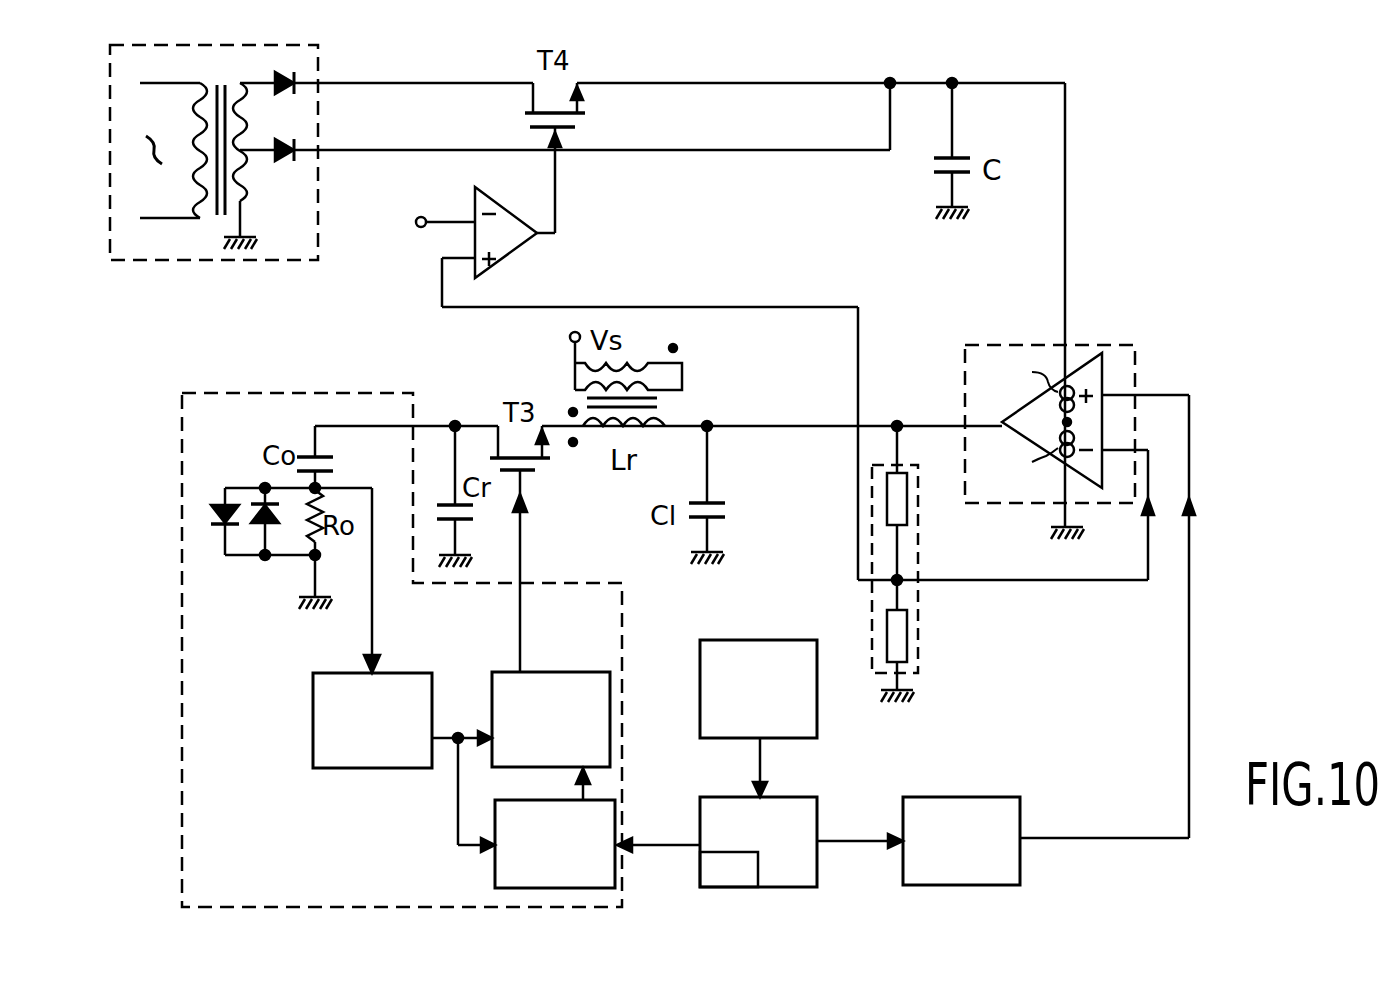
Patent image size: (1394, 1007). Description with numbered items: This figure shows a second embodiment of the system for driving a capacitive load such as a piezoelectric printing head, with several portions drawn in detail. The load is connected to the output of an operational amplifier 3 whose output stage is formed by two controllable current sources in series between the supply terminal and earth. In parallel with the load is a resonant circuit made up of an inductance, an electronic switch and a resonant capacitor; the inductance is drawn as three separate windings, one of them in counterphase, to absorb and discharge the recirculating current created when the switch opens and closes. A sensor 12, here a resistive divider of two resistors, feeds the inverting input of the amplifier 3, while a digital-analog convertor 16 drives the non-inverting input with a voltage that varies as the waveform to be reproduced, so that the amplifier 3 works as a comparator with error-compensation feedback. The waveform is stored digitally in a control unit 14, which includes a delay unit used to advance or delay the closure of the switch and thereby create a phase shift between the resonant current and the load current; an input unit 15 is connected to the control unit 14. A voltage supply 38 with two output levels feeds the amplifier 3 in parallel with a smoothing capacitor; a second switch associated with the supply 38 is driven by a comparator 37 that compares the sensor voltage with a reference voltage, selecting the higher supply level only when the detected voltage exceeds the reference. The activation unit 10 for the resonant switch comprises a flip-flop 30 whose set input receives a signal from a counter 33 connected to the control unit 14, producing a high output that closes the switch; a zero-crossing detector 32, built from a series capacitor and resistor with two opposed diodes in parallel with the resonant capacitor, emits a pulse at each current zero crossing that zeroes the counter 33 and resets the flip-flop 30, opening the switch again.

The voltage supply 38 is at (202, 260).
The comparator 37 is at (514, 250).
The operational amplifier 3 is at (1005, 344).
The sensor 12 is at (870, 500).
The activation unit 10 is at (184, 828).
The zero-crossing detector 32 is at (314, 718).
The flip-flop 30 is at (566, 686).
The counter 33 is at (494, 864).
The input unit 15 is at (759, 660).
The control unit 14 is at (785, 808).
The digital-analog convertor 16 is at (982, 810).